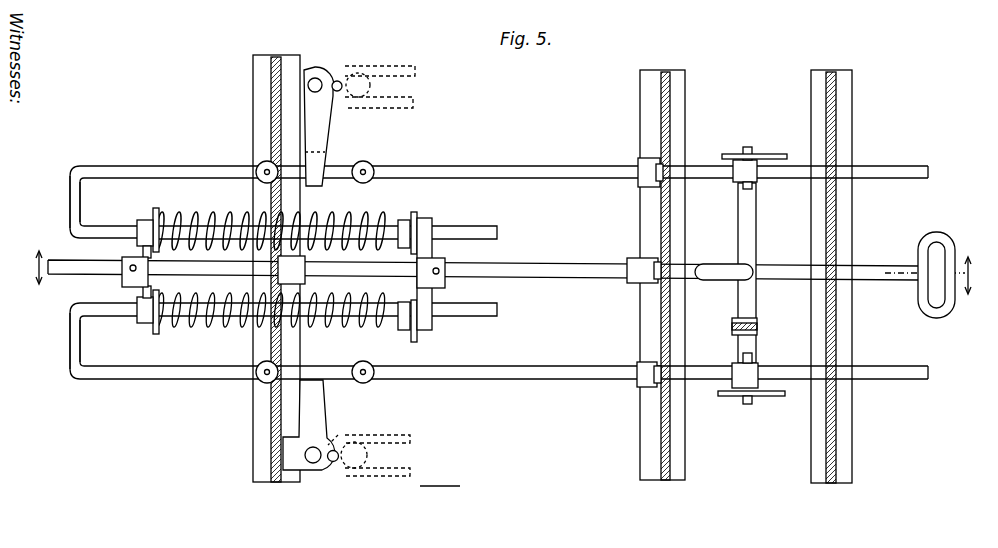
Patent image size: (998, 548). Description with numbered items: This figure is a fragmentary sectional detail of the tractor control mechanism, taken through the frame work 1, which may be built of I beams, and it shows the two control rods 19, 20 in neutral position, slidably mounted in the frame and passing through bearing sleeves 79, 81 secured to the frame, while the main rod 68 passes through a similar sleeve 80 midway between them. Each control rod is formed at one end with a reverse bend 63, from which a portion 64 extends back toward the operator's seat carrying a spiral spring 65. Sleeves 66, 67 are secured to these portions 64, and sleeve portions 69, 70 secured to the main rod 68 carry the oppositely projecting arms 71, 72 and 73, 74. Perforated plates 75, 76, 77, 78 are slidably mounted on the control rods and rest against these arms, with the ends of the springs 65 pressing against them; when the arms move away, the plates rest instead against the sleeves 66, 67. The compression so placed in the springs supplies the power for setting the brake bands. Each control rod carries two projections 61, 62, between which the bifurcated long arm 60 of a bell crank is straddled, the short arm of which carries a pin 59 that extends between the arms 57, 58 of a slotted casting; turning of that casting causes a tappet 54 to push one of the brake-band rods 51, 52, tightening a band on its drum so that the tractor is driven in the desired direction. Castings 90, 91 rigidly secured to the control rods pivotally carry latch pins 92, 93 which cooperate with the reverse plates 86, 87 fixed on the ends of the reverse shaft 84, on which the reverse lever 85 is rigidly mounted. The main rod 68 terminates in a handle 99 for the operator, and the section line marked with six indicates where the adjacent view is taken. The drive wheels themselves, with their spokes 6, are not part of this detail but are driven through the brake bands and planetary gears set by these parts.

The frame work 1 is at (253, 455).
The spokes 6 is at (36, 268).
The control rod 19 is at (882, 380).
The control rod 20 is at (880, 172).
The rod 51 is at (412, 70).
The rod 52 is at (418, 102).
The projection or tappet 54 is at (356, 448).
The arm 57 is at (316, 78).
The arm 58 is at (337, 436).
The pin 59 is at (339, 81).
The long arm of bell crank 60 is at (309, 133).
The projection 61 is at (366, 163).
The projection 62 is at (258, 163).
The reverse bend 63 is at (72, 197).
The portion 64 is at (498, 233).
The spiral spring 65 is at (352, 214).
The sleeve 66 is at (428, 224).
The sleeve 67 is at (140, 230).
The main rod 68 is at (876, 268).
The sleeve portion 69 is at (446, 265).
The sleeve portion 70 is at (124, 260).
The arm 71 is at (430, 236).
The arm 72 is at (433, 290).
The arm 73 is at (124, 298).
The arm 74 is at (138, 238).
The perforated plate 75 is at (408, 220).
The perforated plate 76 is at (410, 332).
The perforated plate 77 is at (157, 334).
The perforated plate 78 is at (153, 218).
The sleeve 79 is at (640, 382).
The sleeve 80 is at (633, 284).
The sleeve 81 is at (638, 186).
The reverse shaft 84 is at (757, 240).
The reverse lever 85 is at (758, 328).
The reverse plate 86 is at (772, 154).
The reverse plate 87 is at (775, 398).
The casting 90 is at (734, 168).
The casting 91 is at (730, 386).
The latch pin 92 is at (745, 400).
The latch pin 93 is at (748, 148).
The handle 99 is at (940, 236).